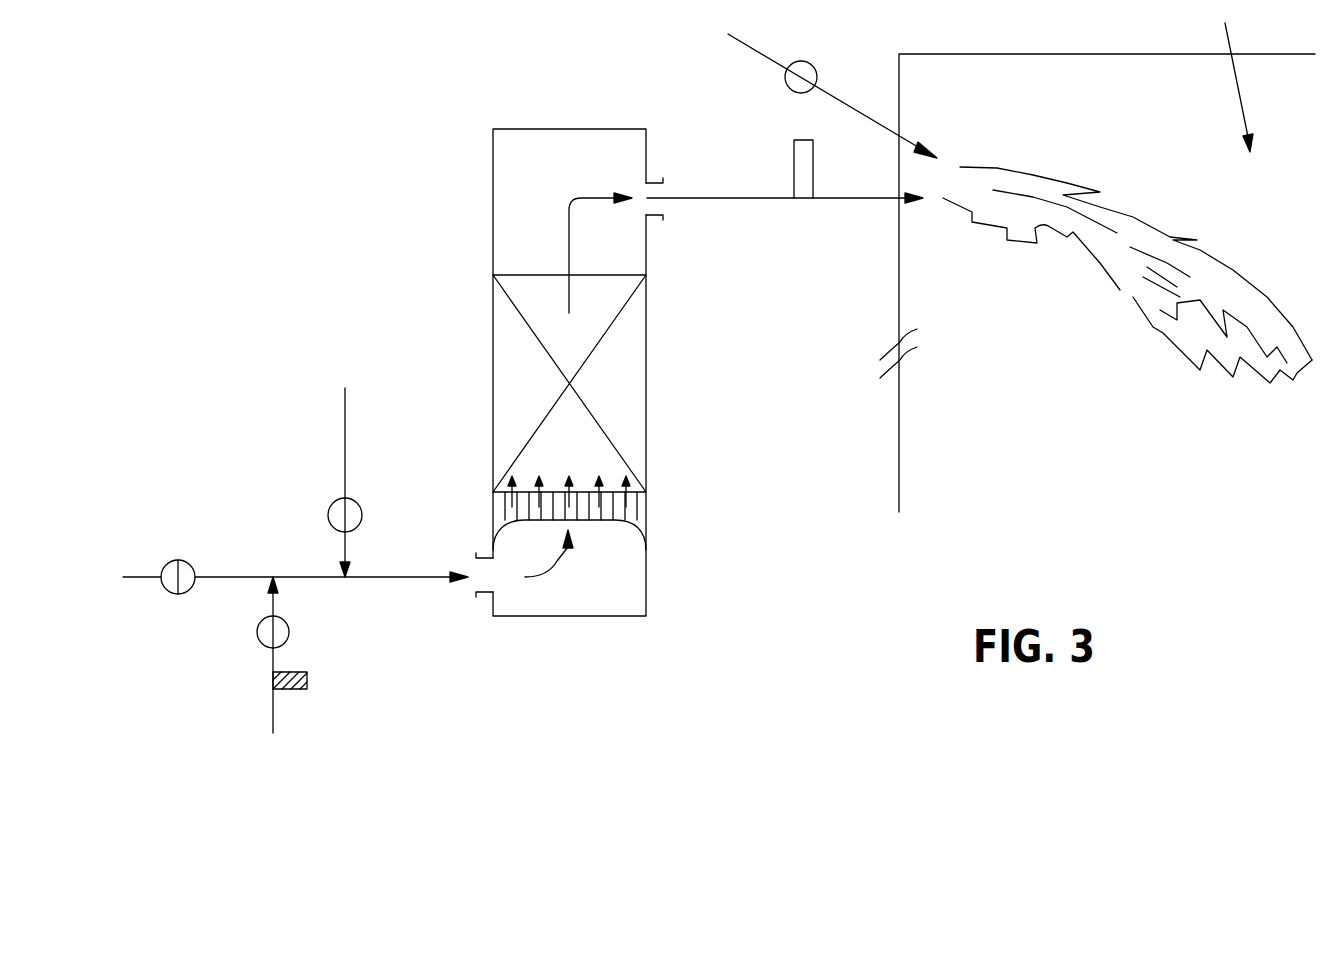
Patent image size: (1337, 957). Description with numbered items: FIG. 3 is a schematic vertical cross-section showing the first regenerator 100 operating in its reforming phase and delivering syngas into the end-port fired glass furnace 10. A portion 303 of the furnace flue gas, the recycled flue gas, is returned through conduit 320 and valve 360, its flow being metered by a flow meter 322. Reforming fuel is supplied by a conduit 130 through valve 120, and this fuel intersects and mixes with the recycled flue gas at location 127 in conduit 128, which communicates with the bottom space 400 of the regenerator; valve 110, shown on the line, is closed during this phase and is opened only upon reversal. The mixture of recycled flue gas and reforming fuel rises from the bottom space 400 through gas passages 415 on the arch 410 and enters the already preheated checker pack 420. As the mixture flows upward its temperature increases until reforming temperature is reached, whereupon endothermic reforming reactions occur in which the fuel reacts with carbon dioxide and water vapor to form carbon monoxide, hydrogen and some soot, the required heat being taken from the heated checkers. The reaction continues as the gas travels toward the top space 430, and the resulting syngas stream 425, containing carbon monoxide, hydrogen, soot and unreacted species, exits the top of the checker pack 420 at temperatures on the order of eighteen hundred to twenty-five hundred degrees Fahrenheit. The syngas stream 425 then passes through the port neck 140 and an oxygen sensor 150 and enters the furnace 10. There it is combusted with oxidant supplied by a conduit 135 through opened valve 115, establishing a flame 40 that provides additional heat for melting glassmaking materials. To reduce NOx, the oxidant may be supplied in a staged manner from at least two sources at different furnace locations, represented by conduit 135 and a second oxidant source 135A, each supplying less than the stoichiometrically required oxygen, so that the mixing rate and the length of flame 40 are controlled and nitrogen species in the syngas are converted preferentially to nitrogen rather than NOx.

The furnace 10 is at (1094, 54).
The flame 40 is at (1165, 230).
The first regenerator 100 is at (560, 129).
The valve 110 is at (189, 562).
The valve 115 is at (792, 62).
The valve 120 is at (363, 516).
The location 127 is at (346, 580).
The conduit 128 is at (430, 582).
The conduit 130 is at (348, 448).
The conduit 135 is at (755, 52).
The oxidant source 135A is at (1239, 77).
The port neck 140 is at (757, 200).
The oxygen sensor 150 is at (794, 154).
The portion of flue gas 303 is at (270, 733).
The conduit 320 is at (270, 698).
The flow meter 322 is at (309, 681).
The valve 360 is at (258, 635).
The bottom space 400 is at (614, 601).
The arch 410 is at (650, 508).
The gas passages 415 is at (597, 514).
The checker pack 420 is at (626, 377).
The syngas stream 425 is at (572, 214).
The top space 430 is at (543, 166).